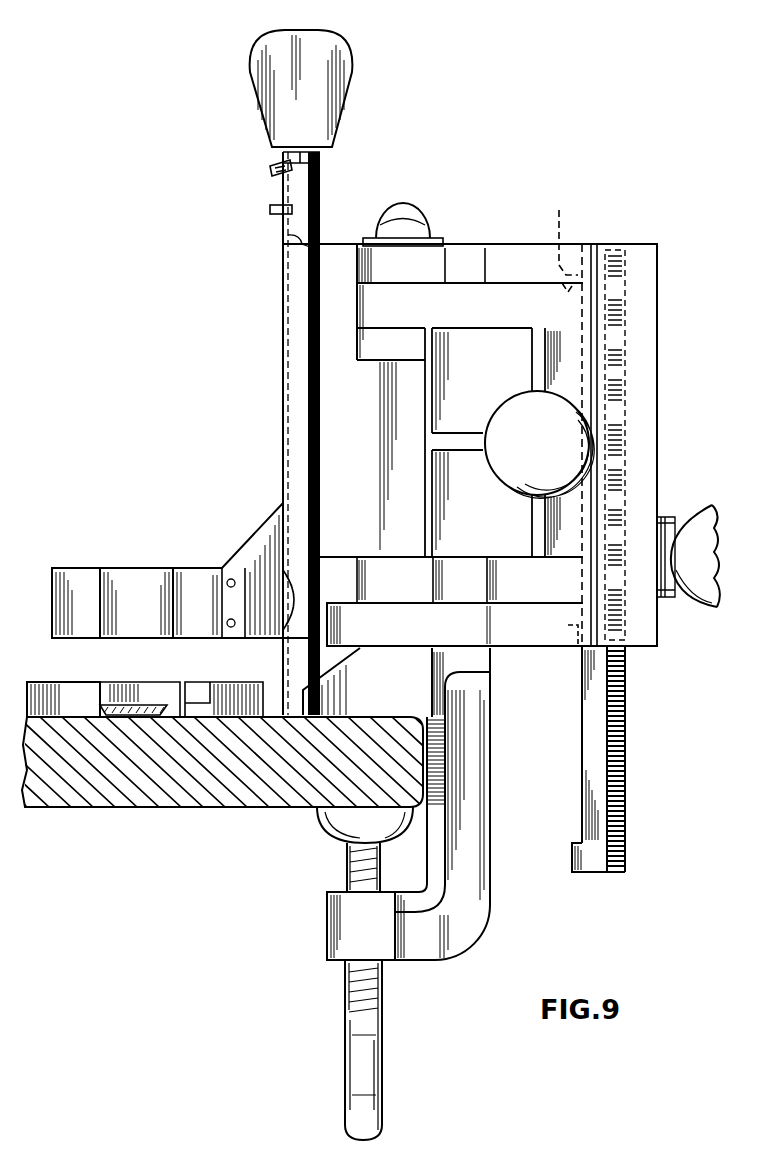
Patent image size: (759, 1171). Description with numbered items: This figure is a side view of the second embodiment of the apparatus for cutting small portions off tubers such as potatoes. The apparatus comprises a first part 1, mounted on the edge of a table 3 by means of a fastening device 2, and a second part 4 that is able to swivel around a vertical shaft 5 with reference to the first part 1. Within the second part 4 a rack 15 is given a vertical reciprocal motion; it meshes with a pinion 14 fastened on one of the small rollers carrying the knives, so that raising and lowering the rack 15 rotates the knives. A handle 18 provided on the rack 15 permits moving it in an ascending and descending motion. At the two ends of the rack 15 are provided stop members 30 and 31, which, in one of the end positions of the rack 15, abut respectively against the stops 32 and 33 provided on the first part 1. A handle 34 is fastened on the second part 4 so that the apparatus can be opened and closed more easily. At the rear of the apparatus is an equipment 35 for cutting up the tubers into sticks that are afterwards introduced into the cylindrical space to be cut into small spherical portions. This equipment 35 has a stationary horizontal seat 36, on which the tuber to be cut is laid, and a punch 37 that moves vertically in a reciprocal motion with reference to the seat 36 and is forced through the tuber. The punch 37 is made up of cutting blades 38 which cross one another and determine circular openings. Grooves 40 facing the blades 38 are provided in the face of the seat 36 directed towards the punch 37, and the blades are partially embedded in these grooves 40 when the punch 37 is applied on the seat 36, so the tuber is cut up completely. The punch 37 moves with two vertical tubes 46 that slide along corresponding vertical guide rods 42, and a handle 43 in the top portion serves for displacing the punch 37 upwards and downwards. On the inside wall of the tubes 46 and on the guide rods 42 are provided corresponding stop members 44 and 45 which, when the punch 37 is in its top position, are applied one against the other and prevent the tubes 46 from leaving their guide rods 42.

The first part 1 is at (642, 457).
The fastening device 2 is at (322, 876).
The table 3 is at (192, 793).
The second part 4 is at (560, 380).
The vertical shaft 5 is at (400, 230).
The pinion 14 is at (612, 318).
The rack 15 is at (590, 720).
The handle 18 is at (700, 596).
The stop member 30 is at (572, 857).
The stop member 31 is at (589, 248).
The stop 32 is at (577, 625).
The stop 33 is at (562, 236).
The handle 34 is at (517, 462).
The equipment 35 is at (185, 525).
The stationary horizontal seat 36 is at (60, 698).
The punch 37 is at (84, 566).
The cutting blades 38 is at (135, 588).
The grooves 40 is at (108, 703).
The vertical guide rods 42 is at (300, 662).
The handle 43 is at (330, 98).
The stop member 44 is at (275, 213).
The stop member 45 is at (272, 166).
The vertical tubes 46 is at (320, 155).